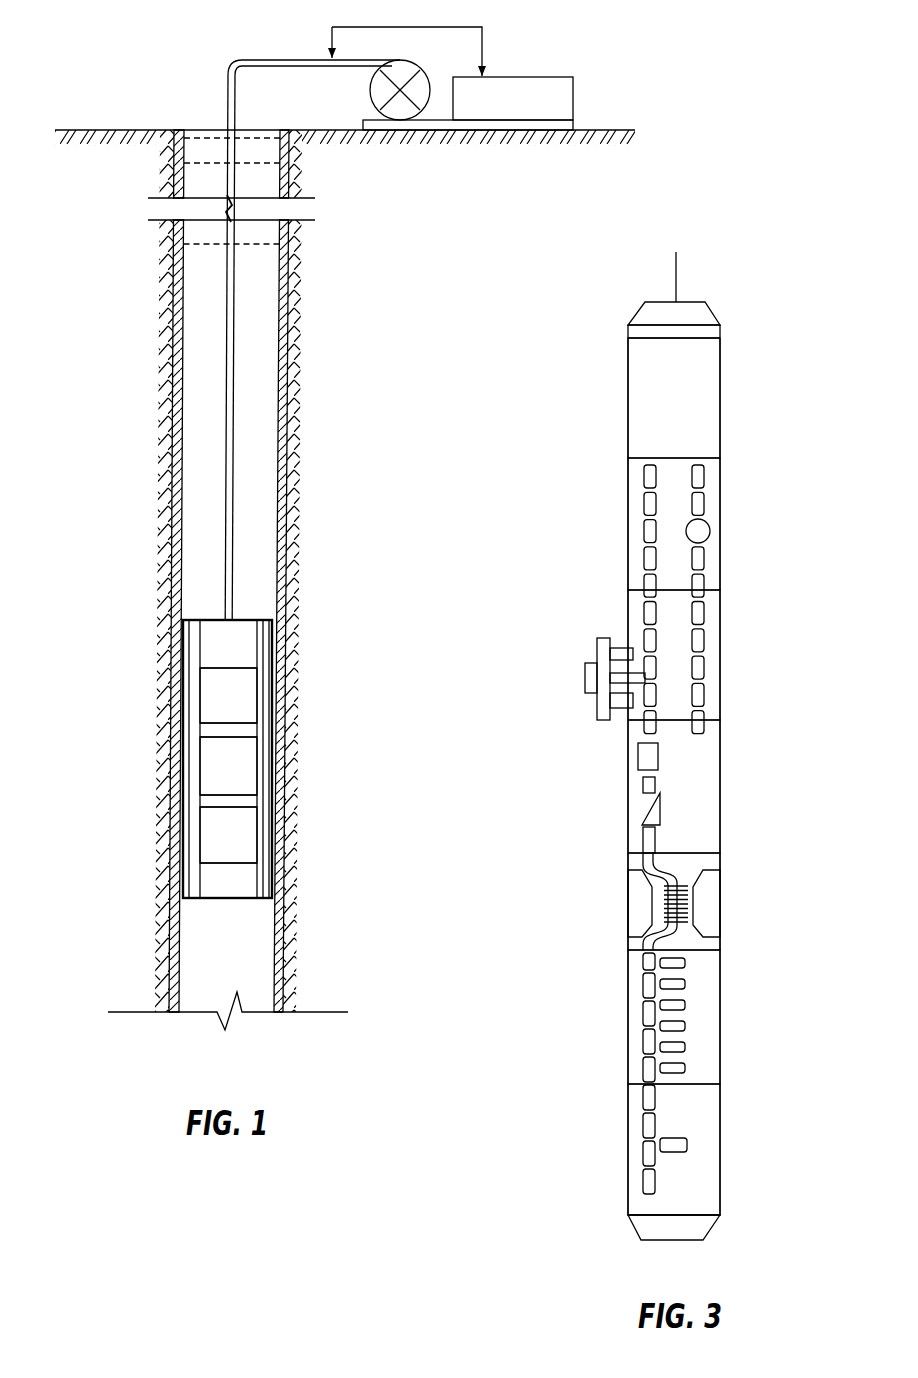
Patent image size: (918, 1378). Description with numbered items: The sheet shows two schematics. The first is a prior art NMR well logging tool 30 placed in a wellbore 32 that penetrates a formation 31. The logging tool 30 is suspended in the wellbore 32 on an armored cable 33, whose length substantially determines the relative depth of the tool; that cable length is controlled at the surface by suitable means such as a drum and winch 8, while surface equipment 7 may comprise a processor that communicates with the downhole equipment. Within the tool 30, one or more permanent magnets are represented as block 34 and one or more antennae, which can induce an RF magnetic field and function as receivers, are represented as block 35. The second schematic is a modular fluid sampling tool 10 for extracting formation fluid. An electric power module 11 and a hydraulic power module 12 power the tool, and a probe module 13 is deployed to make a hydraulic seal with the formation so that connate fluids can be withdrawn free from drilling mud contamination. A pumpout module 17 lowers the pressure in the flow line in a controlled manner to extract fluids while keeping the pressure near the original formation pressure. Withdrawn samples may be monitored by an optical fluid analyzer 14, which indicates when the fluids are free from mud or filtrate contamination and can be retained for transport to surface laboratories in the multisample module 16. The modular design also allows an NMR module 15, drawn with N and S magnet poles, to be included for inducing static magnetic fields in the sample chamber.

In FIG. 1, the surface equipment 7 is at (556, 82).
In FIG. 1, the drum and winch 8 is at (420, 73).
In FIG. 3, the fluid sampling tool 10 is at (597, 310).
In FIG. 3, the electric power module 11 is at (712, 393).
In FIG. 3, the hydraulic power module 12 is at (713, 525).
In FIG. 3, the probe module 13 is at (710, 662).
In FIG. 3, the optical fluid analyzer 14 is at (707, 787).
In FIG. 3, the NMR module 15 is at (710, 882).
In FIG. 3, the multisample module 16 is at (708, 1015).
In FIG. 3, the pumpout module 17 is at (708, 1145).
In FIG. 1, the NMR well logging tool 30 is at (195, 616).
In FIG. 1, the formation 31 is at (145, 130).
In FIG. 1, the wellbore 32 is at (220, 150).
In FIG. 1, the armored cable 33 is at (226, 125).
In FIG. 1, the permanent magnets 34 is at (213, 705).
In FIG. 1, the antennae 35 is at (213, 772).